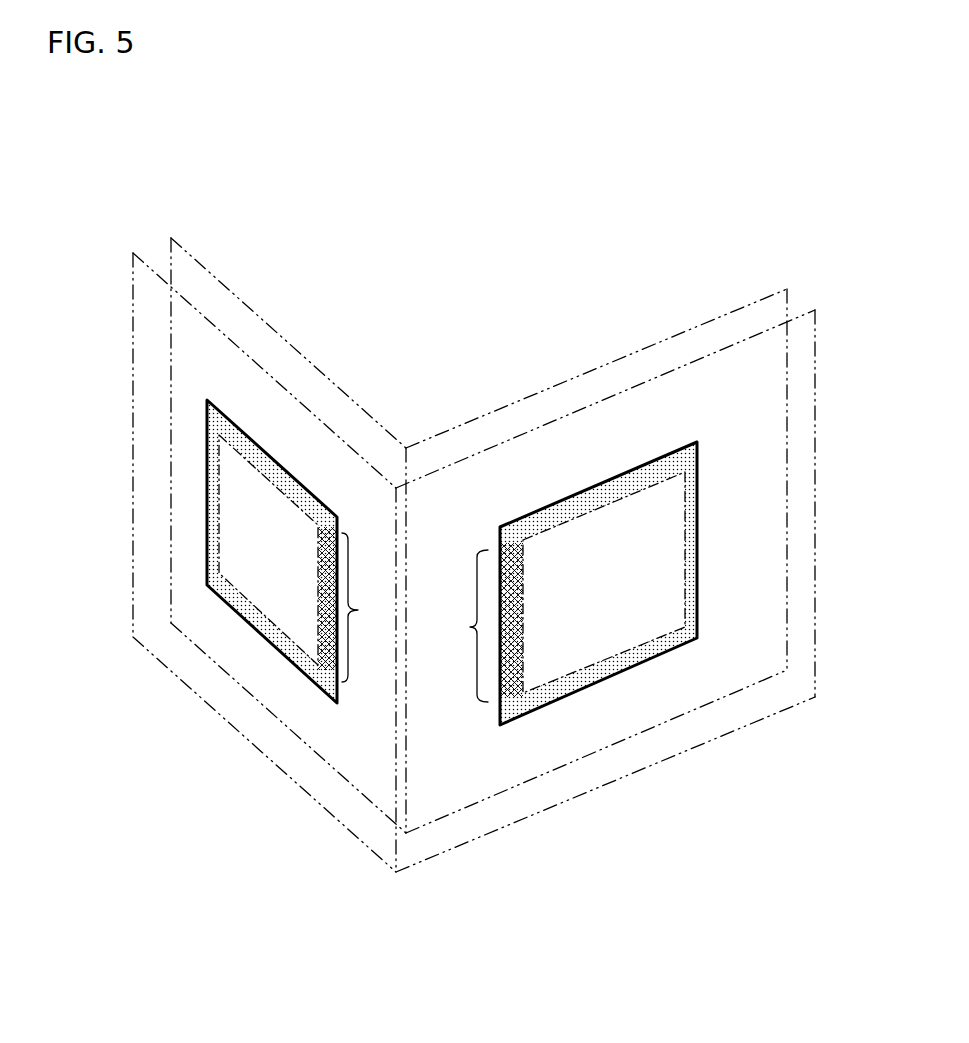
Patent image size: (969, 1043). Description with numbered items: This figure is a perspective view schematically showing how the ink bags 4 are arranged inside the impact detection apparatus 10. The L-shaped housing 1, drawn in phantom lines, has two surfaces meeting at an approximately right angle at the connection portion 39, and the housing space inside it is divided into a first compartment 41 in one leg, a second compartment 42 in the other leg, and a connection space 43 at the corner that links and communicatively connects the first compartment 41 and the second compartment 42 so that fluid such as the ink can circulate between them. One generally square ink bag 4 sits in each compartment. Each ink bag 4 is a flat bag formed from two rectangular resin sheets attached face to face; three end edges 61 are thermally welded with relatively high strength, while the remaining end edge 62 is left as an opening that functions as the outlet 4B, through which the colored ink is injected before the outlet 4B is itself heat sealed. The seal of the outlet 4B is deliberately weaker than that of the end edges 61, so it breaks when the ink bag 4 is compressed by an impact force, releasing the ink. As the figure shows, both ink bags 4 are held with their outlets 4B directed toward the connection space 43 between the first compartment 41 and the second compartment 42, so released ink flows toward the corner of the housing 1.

The housing 1 is at (568, 380).
The ink bag 4 is at (207, 400).
The outlet 4B is at (415, 617).
The impact detection apparatus 10 is at (418, 312).
The connection portion 39 is at (397, 788).
The first compartment 41 is at (757, 703).
The second compartment 42 is at (250, 708).
The connection space 43 is at (423, 812).
The end edge 61 is at (212, 505).
The remaining end edge 62 is at (318, 594).